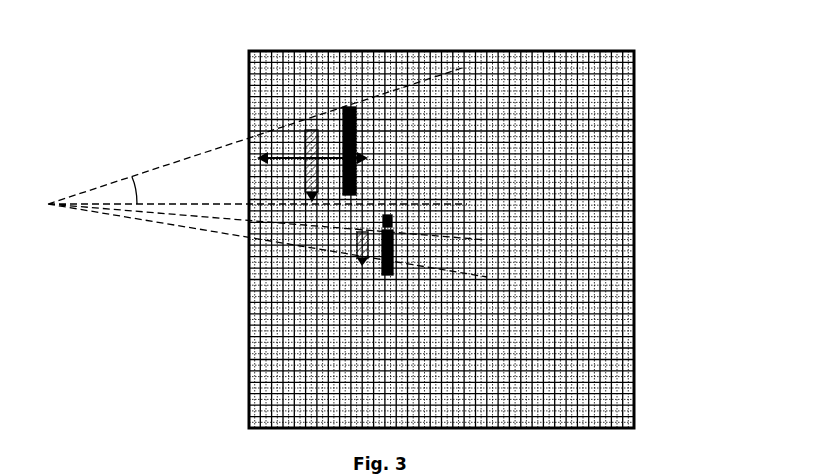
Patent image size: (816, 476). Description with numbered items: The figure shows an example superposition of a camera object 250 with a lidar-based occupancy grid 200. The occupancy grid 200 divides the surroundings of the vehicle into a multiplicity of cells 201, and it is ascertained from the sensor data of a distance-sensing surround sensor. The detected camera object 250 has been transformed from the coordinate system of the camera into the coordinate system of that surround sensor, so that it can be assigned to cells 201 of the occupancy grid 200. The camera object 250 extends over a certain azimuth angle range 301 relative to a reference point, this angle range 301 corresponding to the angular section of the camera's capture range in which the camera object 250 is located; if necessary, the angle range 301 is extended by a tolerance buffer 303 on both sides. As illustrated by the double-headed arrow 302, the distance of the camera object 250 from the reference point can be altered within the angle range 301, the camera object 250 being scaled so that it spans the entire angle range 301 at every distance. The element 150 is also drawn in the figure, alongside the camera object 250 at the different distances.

The occupancy grid 200 is at (249, 62).
The cell 201 is at (620, 318).
The azimuth angle range 301 is at (109, 197).
The double-headed arrow 302 is at (300, 131).
The tolerance buffer 303 is at (308, 199).
The camera object 250 is at (318, 128).
The opaque element 150 is at (356, 107).